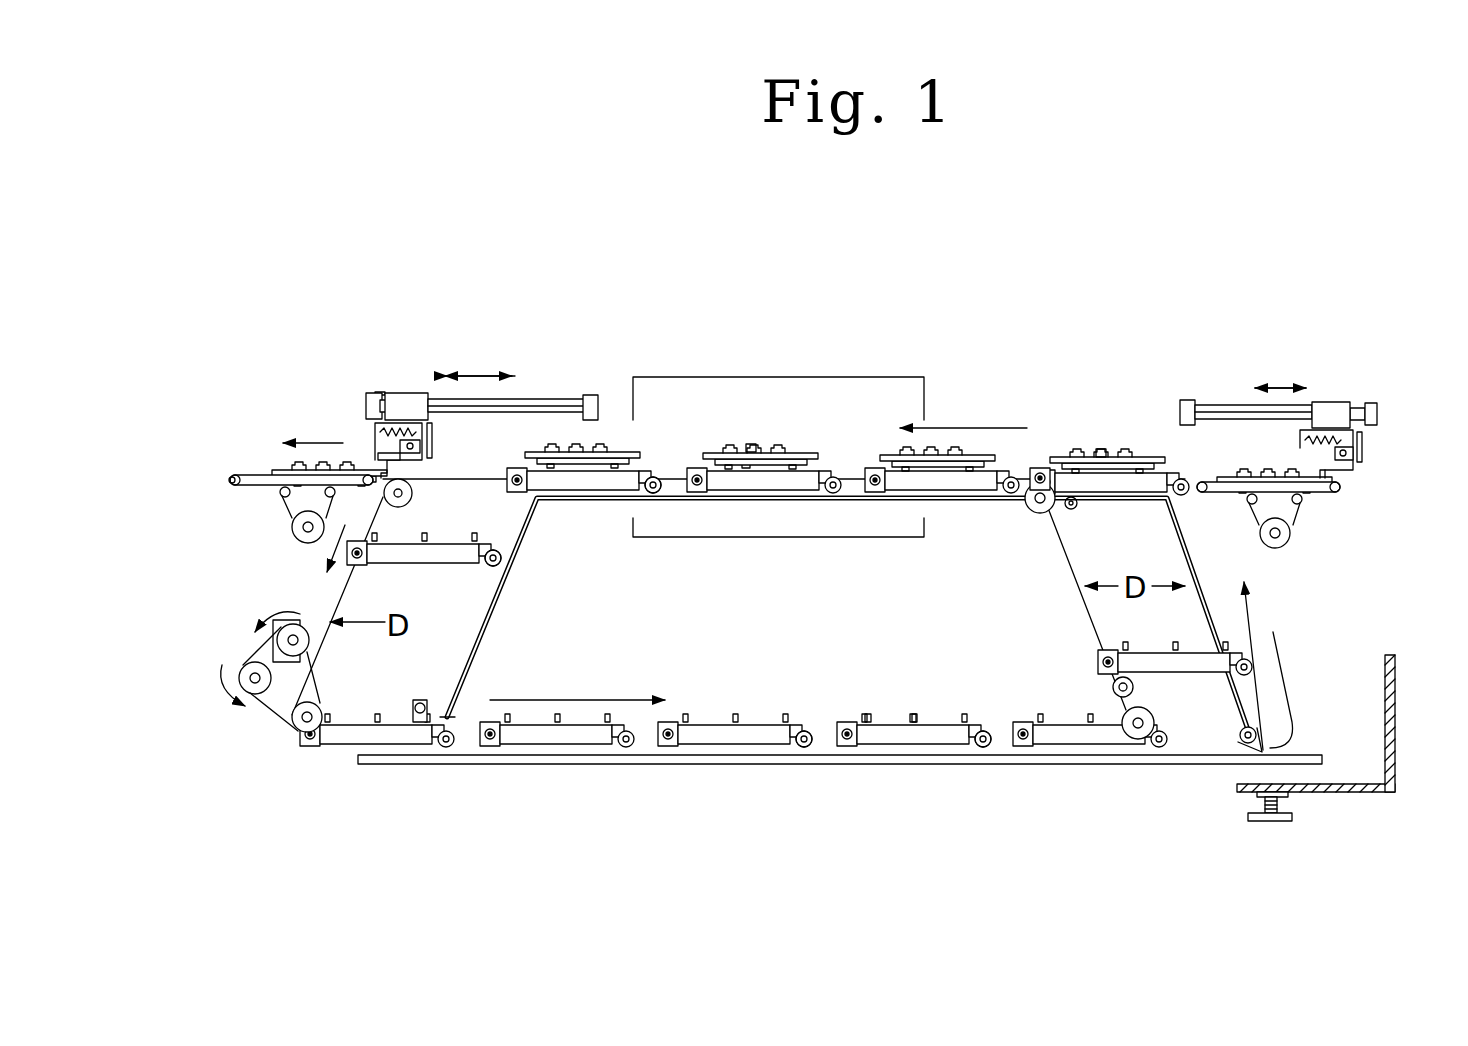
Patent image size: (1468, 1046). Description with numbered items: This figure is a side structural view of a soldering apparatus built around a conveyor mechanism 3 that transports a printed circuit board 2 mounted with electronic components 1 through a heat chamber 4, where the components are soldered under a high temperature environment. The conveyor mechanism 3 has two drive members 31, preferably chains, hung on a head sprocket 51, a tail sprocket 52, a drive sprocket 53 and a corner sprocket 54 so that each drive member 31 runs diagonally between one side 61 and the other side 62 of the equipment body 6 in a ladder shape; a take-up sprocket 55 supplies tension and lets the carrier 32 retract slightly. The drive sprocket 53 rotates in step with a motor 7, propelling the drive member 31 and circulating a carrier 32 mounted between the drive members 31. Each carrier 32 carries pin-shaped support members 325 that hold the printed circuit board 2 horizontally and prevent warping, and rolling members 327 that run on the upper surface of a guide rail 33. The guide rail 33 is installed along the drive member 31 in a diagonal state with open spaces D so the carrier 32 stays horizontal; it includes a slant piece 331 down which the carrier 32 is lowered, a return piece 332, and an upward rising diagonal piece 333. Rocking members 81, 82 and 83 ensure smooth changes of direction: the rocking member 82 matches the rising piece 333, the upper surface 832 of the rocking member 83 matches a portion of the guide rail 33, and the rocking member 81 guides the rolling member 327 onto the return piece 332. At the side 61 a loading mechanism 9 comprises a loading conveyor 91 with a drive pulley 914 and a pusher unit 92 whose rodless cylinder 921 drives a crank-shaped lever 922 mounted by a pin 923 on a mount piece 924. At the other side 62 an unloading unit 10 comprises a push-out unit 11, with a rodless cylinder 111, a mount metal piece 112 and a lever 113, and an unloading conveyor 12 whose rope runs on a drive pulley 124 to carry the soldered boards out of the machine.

The electronic components 1 is at (740, 450).
The printed circuit board 2 is at (617, 462).
The conveyor mechanism 3 is at (1015, 296).
The heat chamber 4 is at (875, 377).
The equipment body 6 is at (1357, 792).
The motor 7 is at (274, 637).
The loading mechanism 9 is at (1275, 362).
The unloading unit 10 is at (368, 366).
The push-out unit 11 is at (481, 362).
The unloading conveyor 12 is at (226, 462).
The drive member 31 is at (340, 594).
The carrier 32 is at (585, 488).
The guide rail 33 is at (948, 502).
The head sprocket 51 is at (1036, 511).
The tail sprocket 52 is at (414, 494).
The drive sprocket 53 is at (310, 705).
The corner sprocket 54 is at (1130, 716).
The take-up sprocket 55 is at (1135, 690).
The side of equipment body 61 is at (1279, 631).
The side of equipment body 62 is at (180, 478).
The rocking member 81 is at (423, 700).
The rocking member 82 is at (1250, 752).
The rocking member 83 is at (1071, 510).
The loading conveyor 91 is at (1303, 540).
The pusher unit 92 is at (1386, 412).
The rodless cylinder 111 is at (565, 396).
The mount metal piece 112 is at (402, 394).
The lever 113 is at (386, 456).
The drive pulley 124 is at (295, 518).
The pin-shaped support members 325 is at (770, 465).
The rolling member 327 is at (842, 492).
The slant piece 331 is at (490, 625).
The return piece 332 is at (583, 765).
The upward rising diagonal piece 333 is at (1200, 552).
The upper surface 832 is at (1022, 478).
The drive pulley 914 is at (1292, 520).
The rodless cylinder 921 is at (1208, 400).
The lever 922 is at (1362, 472).
The pin 923 is at (1358, 448).
The mount piece 924 is at (1332, 400).